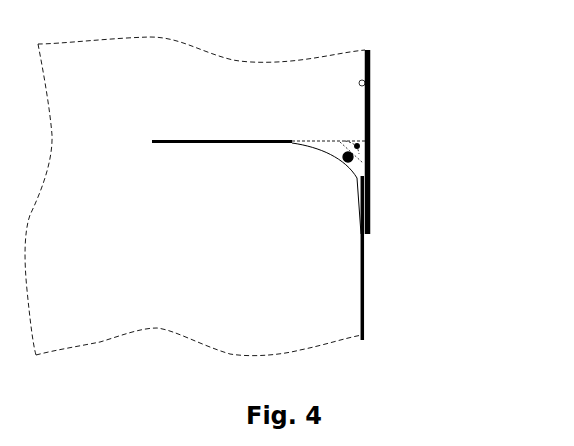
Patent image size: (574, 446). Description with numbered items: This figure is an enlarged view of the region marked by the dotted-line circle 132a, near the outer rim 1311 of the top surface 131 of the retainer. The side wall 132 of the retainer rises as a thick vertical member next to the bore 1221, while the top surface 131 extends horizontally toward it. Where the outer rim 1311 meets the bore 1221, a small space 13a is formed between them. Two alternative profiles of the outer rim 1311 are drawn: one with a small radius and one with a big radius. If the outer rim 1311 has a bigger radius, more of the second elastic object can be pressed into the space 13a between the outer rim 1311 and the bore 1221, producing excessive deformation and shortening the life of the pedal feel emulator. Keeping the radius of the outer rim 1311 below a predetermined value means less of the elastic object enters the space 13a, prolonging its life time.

The circle with dotted line 132a is at (321, 124).
The side wall of the retainer 132 is at (366, 246).
The bore 1221 is at (369, 81).
The top surface of the retainer 131 is at (193, 141).
The space 13a is at (370, 141).
The outer rim of the top surface 1311 is at (345, 148).